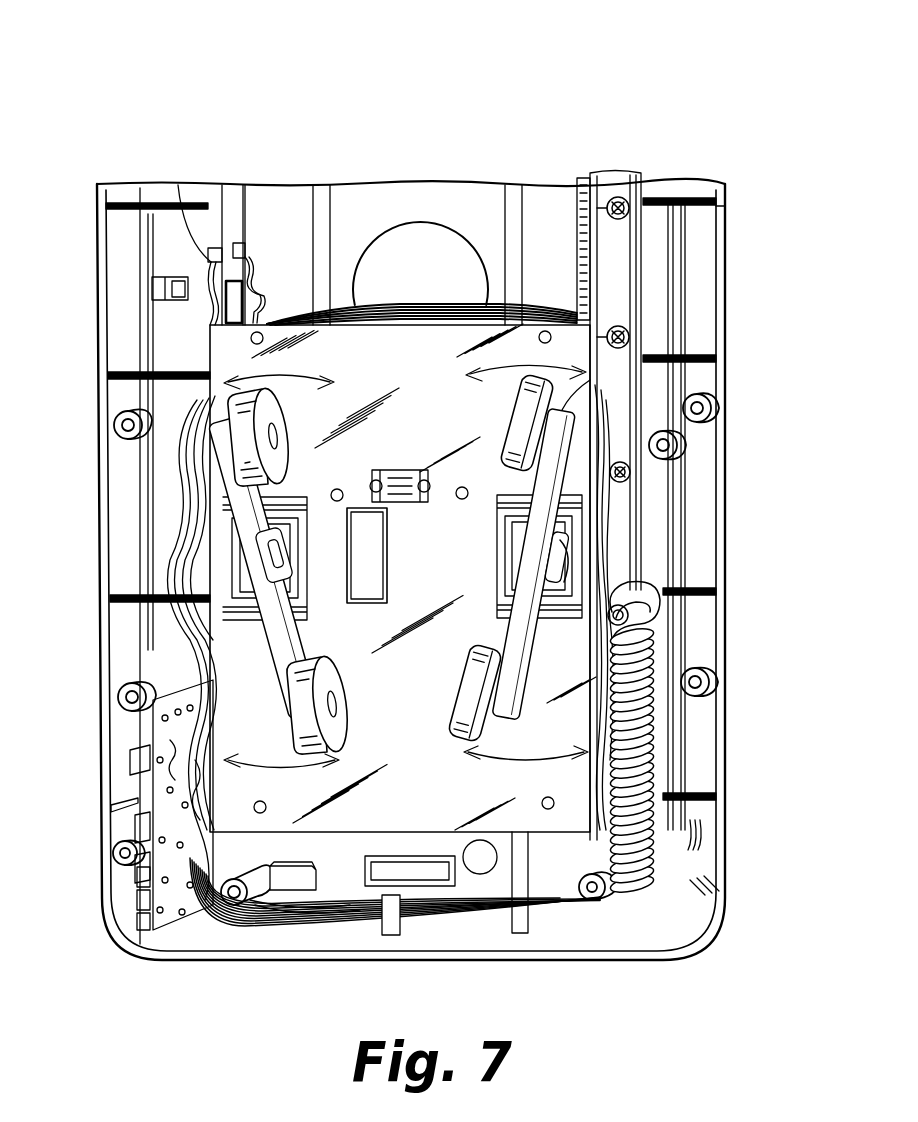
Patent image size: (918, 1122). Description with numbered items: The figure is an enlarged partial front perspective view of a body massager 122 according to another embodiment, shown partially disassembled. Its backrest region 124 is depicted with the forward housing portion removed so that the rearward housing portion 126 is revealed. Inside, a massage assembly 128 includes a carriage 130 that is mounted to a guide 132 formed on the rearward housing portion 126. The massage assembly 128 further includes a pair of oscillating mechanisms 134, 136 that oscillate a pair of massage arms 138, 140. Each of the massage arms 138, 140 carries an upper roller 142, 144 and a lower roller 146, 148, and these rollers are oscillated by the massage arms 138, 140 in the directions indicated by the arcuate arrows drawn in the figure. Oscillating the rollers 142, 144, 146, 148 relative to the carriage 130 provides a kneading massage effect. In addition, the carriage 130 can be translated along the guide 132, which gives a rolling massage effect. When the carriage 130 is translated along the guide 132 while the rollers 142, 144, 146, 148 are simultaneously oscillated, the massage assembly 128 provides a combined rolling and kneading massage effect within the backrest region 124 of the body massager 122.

The body massager 122 is at (432, 72).
The backrest region 124 is at (515, 90).
The rearward housing portion 126 is at (722, 210).
The massage assembly 128 is at (598, 308).
The carriage 130 is at (573, 316).
The guide 132 is at (233, 205).
The oscillating mechanism 134 is at (230, 598).
The oscillating mechanism 136 is at (570, 555).
The massage arm 138 is at (258, 633).
The massage arm 140 is at (530, 596).
The upper roller 142 is at (232, 415).
The upper roller 144 is at (558, 380).
The lower roller 146 is at (297, 747).
The lower roller 148 is at (490, 723).